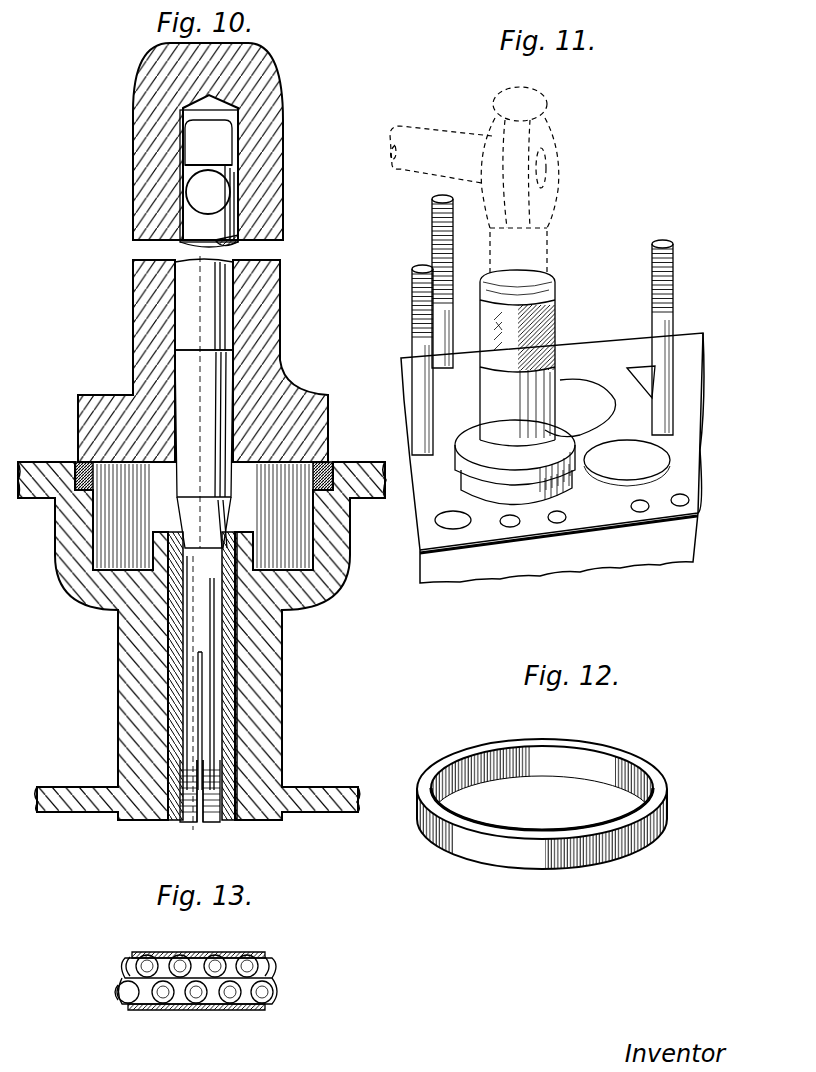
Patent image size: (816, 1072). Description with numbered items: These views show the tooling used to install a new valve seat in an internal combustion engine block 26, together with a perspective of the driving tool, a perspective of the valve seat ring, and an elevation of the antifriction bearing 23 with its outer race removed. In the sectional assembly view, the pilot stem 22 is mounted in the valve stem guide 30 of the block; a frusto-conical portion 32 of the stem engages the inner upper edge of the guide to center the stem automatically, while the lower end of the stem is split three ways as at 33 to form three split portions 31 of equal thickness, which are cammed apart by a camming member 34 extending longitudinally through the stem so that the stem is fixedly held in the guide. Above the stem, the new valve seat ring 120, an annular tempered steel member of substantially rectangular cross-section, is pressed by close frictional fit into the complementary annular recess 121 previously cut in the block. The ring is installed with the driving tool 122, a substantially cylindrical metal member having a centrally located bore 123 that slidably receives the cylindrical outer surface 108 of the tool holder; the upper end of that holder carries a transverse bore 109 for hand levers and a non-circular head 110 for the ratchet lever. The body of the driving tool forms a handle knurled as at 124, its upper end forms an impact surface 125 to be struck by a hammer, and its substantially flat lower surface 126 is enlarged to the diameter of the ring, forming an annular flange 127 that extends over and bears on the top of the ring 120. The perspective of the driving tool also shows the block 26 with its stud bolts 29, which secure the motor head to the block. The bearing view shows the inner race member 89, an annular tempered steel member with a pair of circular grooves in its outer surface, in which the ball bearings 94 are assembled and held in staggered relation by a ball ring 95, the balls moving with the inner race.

In FIG. 10, the impact surface 125 is at (248, 43).
In FIG. 11, the impact surface 125 is at (533, 272).
In FIG. 10, the bore 123 is at (178, 133).
In FIG. 10, the non-circular end or head 110 is at (222, 152).
In FIG. 10, the transverse bore 109 is at (180, 182).
In FIG. 10, the cylindrical outer surface 108 is at (172, 216).
In FIG. 10, the driving tool 122 is at (272, 226).
In FIG. 11, the driving tool 122 is at (557, 278).
In FIG. 10, the annular flange 127 is at (310, 398).
In FIG. 11, the annular flange 127 is at (472, 462).
In FIG. 10, the lower surface 126 is at (290, 475).
In FIG. 10, the valve seat ring 120 is at (315, 475).
In FIG. 11, the valve seat ring 120 is at (466, 485).
In FIG. 12, the valve seat ring 120 is at (615, 757).
In FIG. 10, the recess 121 is at (328, 507).
In FIG. 10, the frusto-conical portion 32 is at (190, 512).
In FIG. 10, the valve stem guide 30 is at (175, 632).
In FIG. 10, the pilot stem 22 is at (208, 632).
In FIG. 10, the split 33 is at (198, 698).
In FIG. 10, the split portions 31 is at (182, 824).
In FIG. 10, the camming member 34 is at (200, 824).
In FIG. 11, the stud bolts 29 is at (418, 265).
In FIG. 11, the internal combustion engine block 26 is at (613, 557).
In FIG. 11, the knurled portion 124 is at (560, 318).
In FIG. 13, the inner race member 89 is at (215, 958).
In FIG. 13, the ball bearings 94 is at (140, 960).
In FIG. 13, the bearing 23 is at (197, 992).
In FIG. 13, the ball ring 95 is at (145, 1008).